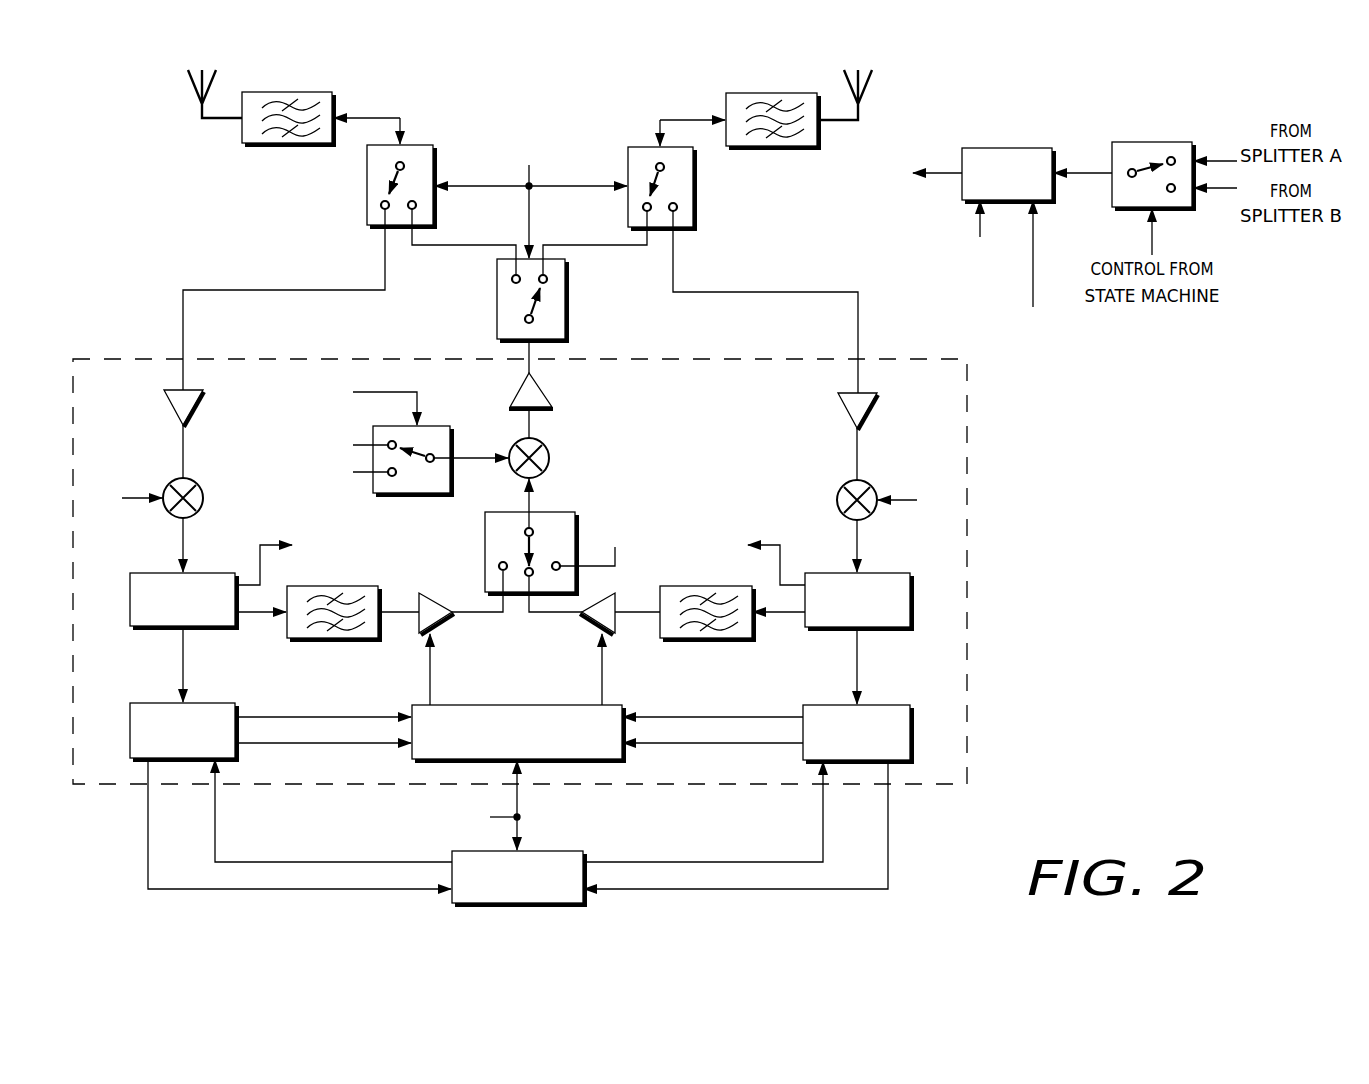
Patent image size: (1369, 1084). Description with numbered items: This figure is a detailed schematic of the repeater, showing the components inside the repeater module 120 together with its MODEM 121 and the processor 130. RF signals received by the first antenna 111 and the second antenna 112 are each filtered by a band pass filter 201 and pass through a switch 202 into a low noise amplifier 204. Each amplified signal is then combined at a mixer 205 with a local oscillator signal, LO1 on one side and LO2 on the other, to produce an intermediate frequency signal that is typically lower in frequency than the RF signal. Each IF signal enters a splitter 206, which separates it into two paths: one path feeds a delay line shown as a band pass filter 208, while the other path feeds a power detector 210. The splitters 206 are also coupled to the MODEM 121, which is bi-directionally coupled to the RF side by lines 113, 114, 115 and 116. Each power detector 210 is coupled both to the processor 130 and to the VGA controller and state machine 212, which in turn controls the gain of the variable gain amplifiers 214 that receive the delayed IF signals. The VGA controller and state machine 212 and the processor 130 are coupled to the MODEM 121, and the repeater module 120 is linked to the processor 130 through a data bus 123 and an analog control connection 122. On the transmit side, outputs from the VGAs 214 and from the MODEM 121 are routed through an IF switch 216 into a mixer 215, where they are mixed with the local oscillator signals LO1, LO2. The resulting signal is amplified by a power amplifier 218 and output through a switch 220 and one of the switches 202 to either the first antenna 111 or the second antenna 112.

The first antenna 111 is at (192, 86).
The second antenna 112 is at (866, 86).
The line 113 is at (470, 247).
The line 114 is at (590, 247).
The line 115 is at (270, 289).
The line 116 is at (764, 291).
The repeater module 120 is at (683, 359).
The MODEM 121 is at (994, 148).
The analog control connection 122 is at (215, 831).
The data bus 123 is at (148, 843).
The processor 130 is at (500, 906).
The band pass filter 201 is at (265, 148).
The switch 202 is at (367, 193).
The low noise amplifier 204 is at (168, 402).
The mixer 205 is at (205, 497).
The splitter 206 is at (155, 630).
The band pass filter 208 is at (302, 640).
The power detector 210 is at (130, 733).
The VGA controller and state machine 212 is at (518, 705).
The variable gain amplifier 214 is at (440, 628).
The mixer 215 is at (551, 456).
The IF switch 216 is at (485, 548).
The power amplifier 218 is at (541, 395).
The switch 220 is at (568, 302).